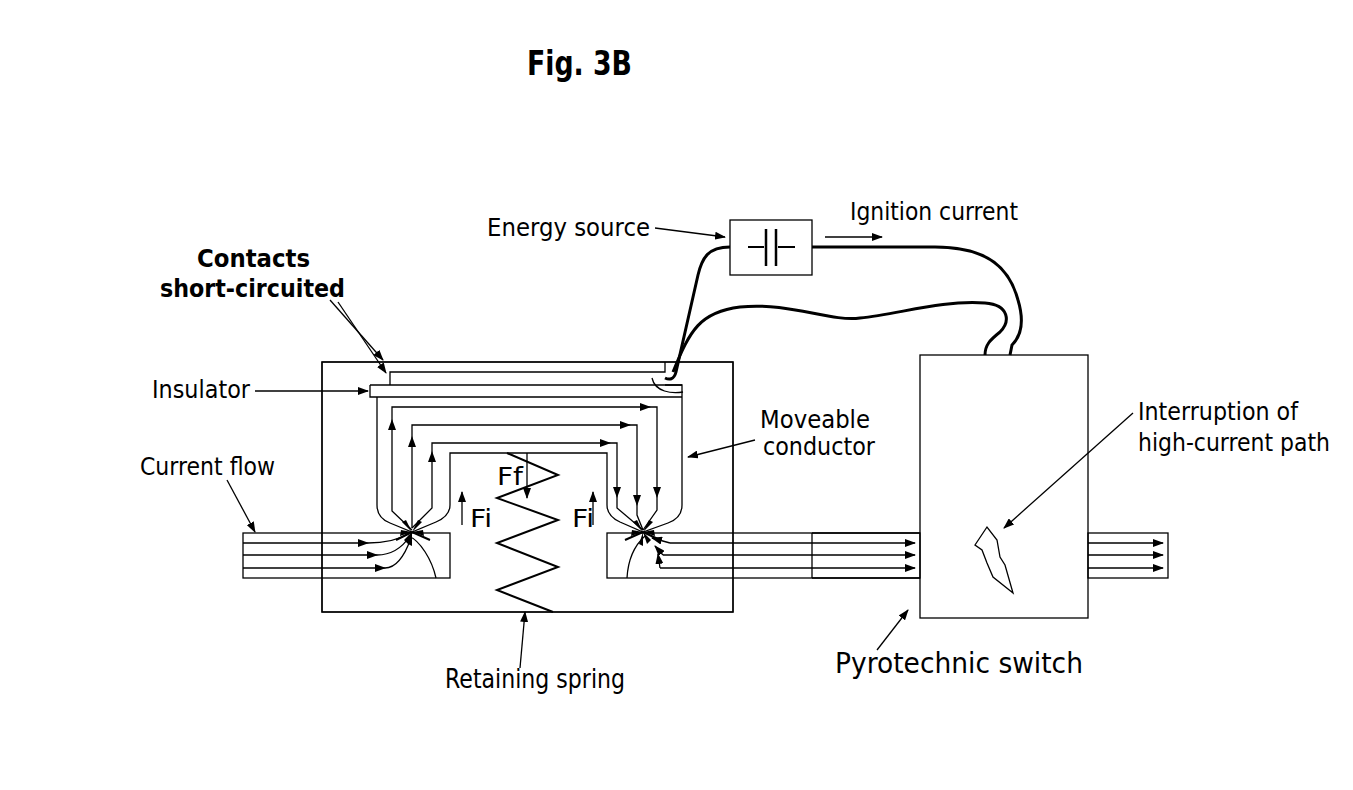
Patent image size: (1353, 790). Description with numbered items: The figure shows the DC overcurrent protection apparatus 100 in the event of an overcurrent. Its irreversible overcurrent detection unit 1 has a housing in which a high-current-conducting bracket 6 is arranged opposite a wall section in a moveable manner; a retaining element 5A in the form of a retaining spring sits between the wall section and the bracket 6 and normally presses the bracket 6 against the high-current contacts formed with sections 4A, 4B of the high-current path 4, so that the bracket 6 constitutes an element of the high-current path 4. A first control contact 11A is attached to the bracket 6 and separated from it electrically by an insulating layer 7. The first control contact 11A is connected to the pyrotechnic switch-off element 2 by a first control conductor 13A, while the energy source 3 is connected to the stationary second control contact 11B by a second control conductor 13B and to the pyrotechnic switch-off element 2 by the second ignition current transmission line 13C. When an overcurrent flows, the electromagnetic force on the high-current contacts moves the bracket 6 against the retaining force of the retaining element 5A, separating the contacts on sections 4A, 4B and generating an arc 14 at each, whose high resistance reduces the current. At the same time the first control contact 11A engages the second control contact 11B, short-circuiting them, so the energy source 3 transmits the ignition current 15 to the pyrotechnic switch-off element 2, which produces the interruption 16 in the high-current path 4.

The DC overcurrent protection apparatus 100 is at (353, 237).
The overcurrent detection unit 1 is at (712, 510).
The pyrotechnic switch-off element 2 is at (1019, 449).
The energy source 3 is at (750, 232).
The high-current path 4 is at (858, 533).
The section of the high-current path 4A is at (426, 566).
The section of the high-current path 4B is at (640, 566).
The retaining element 5A is at (518, 577).
The high-current-conducting bracket 6 is at (383, 463).
The insulating layer 7 is at (386, 384).
The first control contact 11A is at (683, 385).
The second control contact 11B is at (465, 370).
The first control conductor 13A is at (850, 318).
The second control conductor 13B is at (700, 305).
The second ignition current transmission line 13C is at (1005, 265).
The arc 14 is at (442, 568).
The ignition current 15 is at (845, 235).
The interruption 16 is at (1000, 560).